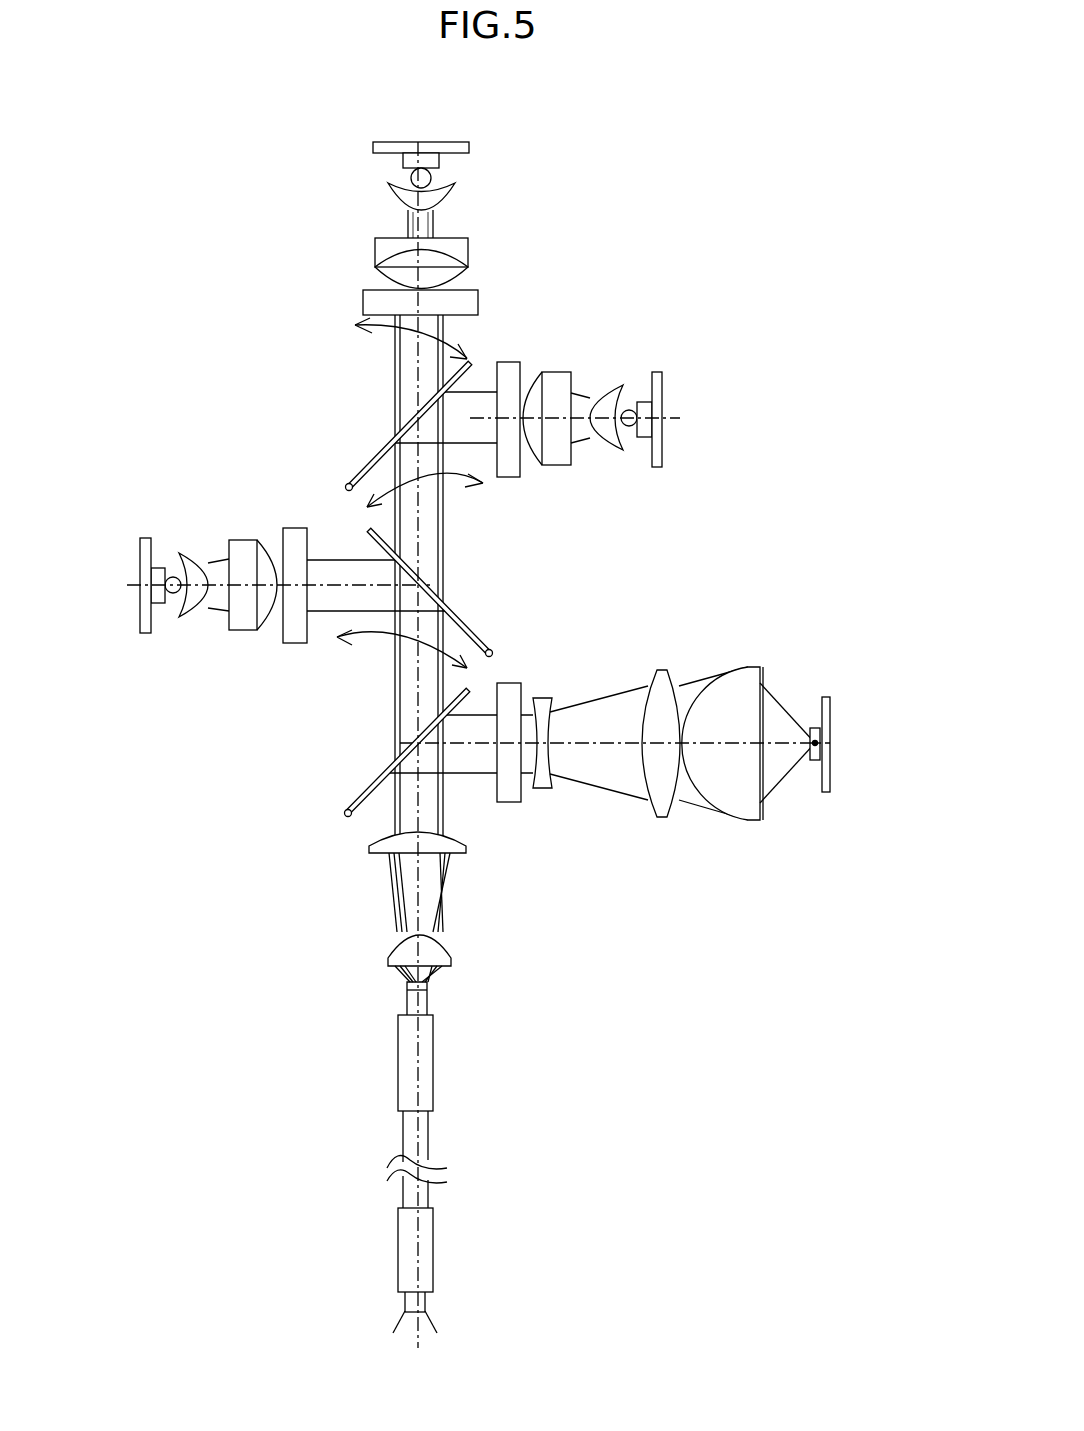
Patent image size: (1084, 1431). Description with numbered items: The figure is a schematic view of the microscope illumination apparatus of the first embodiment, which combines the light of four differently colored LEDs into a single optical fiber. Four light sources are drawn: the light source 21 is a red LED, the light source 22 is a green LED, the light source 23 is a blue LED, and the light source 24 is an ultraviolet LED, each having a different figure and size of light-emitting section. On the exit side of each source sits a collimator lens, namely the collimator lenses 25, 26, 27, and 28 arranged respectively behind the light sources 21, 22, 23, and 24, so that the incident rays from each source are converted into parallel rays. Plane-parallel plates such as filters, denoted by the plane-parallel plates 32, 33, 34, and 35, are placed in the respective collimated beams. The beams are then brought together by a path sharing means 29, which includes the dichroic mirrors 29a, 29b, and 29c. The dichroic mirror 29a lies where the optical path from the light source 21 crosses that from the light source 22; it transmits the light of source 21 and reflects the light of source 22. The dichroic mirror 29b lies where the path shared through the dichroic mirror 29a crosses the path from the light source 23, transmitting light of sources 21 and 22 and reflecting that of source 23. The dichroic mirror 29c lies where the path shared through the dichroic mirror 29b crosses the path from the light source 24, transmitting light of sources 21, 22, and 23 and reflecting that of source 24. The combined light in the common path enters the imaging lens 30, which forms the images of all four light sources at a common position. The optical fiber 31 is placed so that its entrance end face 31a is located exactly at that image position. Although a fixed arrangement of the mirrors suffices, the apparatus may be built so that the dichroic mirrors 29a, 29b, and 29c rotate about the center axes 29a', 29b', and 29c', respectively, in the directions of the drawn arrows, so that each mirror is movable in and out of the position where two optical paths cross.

The light source 21 is at (343, 117).
The light source 22 is at (682, 505).
The light source 23 is at (173, 662).
The light source 24 is at (848, 643).
The collimator lens 25 is at (343, 182).
The collimator lens 26 is at (620, 505).
The collimator lens 27 is at (270, 662).
The collimator lens 28 is at (770, 643).
The path sharing means 29 is at (356, 567).
The dichroic mirror 29a is at (355, 424).
The dichroic mirror 29b is at (364, 537).
The dichroic mirror 29c is at (354, 634).
The center axis 29a' is at (332, 454).
The center axis 29b' is at (513, 609).
The center axis 29c' is at (331, 778).
The imaging lens 30 is at (470, 822).
The optical fiber 31 is at (415, 1157).
The entrance end face 31a is at (408, 981).
The plane-parallel plate 32 is at (363, 303).
The plane-parallel plate 33 is at (507, 477).
The plane-parallel plate 34 is at (300, 643).
The plane-parallel plate 35 is at (509, 683).